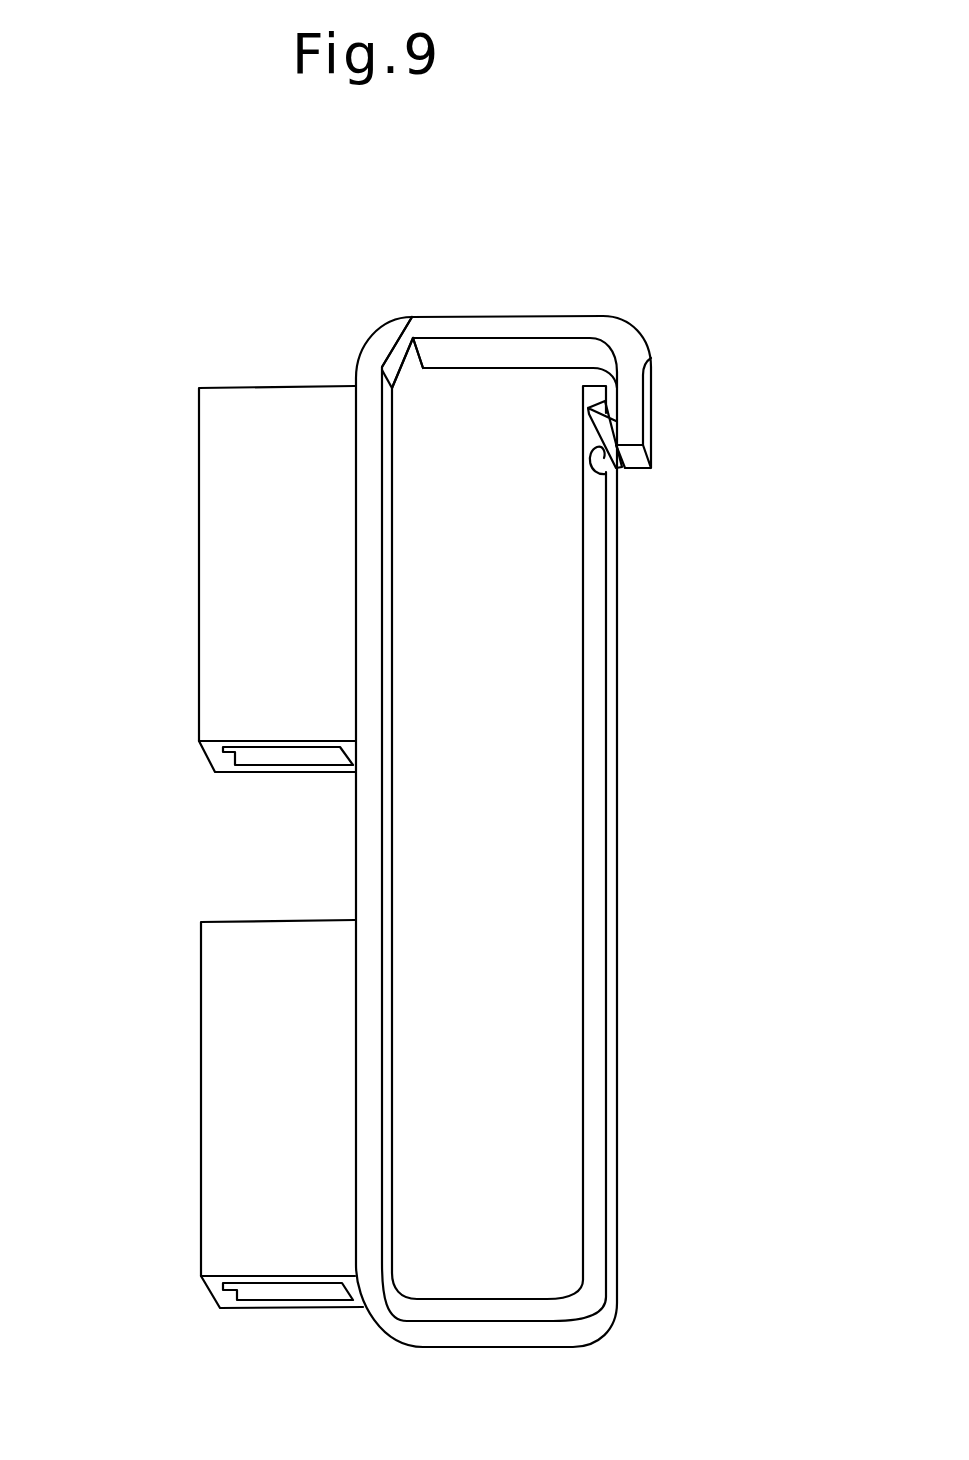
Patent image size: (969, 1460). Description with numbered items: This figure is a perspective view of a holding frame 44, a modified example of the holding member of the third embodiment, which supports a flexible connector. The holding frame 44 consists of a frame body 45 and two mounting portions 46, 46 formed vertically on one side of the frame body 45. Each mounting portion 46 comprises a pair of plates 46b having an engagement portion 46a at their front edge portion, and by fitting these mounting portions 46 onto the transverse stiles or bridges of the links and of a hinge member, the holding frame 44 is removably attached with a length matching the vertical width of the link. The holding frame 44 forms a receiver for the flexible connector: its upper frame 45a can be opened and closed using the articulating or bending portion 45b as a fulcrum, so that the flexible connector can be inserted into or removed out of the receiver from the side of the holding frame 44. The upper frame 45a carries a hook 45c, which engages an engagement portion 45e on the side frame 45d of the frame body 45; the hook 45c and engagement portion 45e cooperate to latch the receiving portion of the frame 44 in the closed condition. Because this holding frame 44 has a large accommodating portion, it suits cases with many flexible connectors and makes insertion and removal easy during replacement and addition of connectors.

The holding frame 44 is at (547, 288).
The frame body 45 is at (628, 635).
The upper frame 45a is at (594, 330).
The articulating or bending portion 45b is at (408, 308).
The hook 45c is at (588, 408).
The side frame 45d is at (597, 748).
The engagement portion 45e is at (606, 475).
The mounting portion 46 is at (259, 377).
The engagement portion 46a is at (209, 749).
The plate 46b is at (211, 612).